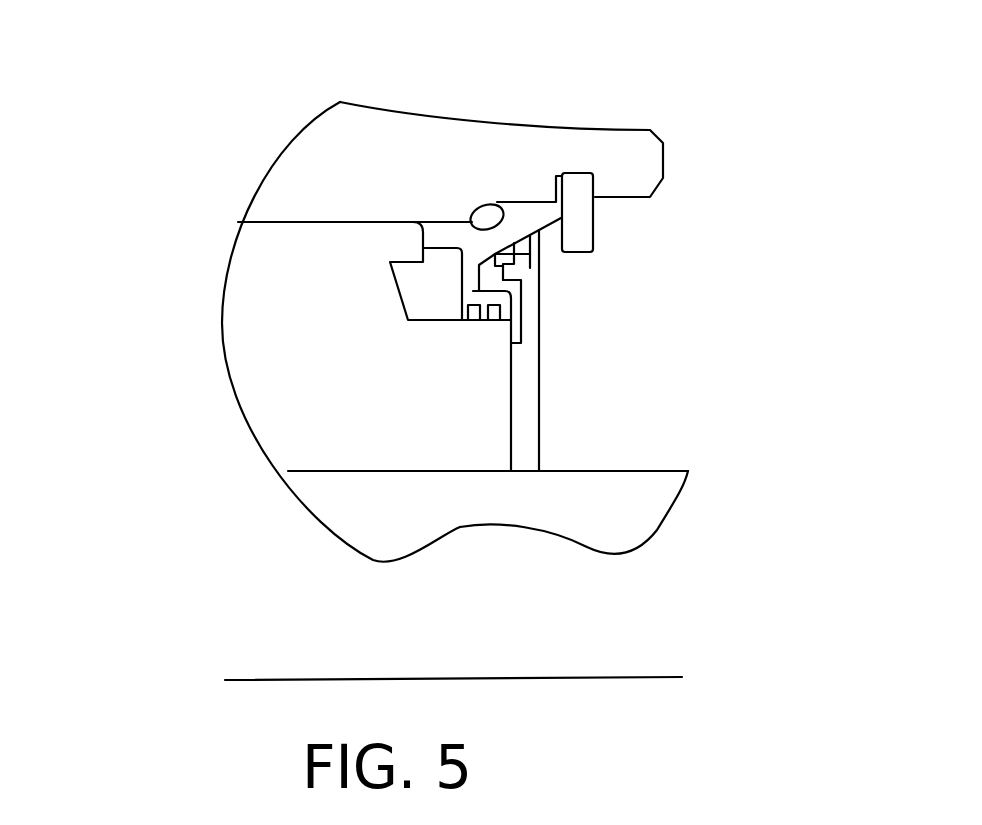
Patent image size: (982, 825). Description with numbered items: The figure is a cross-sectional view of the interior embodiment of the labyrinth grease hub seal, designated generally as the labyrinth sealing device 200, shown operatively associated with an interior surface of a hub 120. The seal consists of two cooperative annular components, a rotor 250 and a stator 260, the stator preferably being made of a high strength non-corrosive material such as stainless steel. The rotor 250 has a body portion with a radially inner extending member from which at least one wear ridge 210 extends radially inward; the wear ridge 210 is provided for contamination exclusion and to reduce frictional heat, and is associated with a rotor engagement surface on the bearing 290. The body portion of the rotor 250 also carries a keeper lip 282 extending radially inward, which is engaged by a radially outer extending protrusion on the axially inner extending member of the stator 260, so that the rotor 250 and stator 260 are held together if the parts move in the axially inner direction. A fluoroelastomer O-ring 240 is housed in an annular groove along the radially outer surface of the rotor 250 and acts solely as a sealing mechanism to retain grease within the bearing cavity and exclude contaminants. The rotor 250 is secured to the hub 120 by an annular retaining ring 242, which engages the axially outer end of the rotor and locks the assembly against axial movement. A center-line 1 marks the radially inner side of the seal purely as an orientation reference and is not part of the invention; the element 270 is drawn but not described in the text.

The labyrinth sealing device 200 is at (138, 130).
The hub 120 is at (665, 150).
The annular retaining ring 242 is at (595, 216).
The fluoroelastomer O-ring 240 is at (488, 204).
The rotor 250 is at (528, 217).
The keeper lip 282 is at (512, 265).
The stator 260 is at (533, 296).
The bearing 290 is at (480, 400).
The wear ridge 210 is at (470, 320).
The flexible sheet 270 is at (613, 473).
The center-line 1 is at (603, 680).